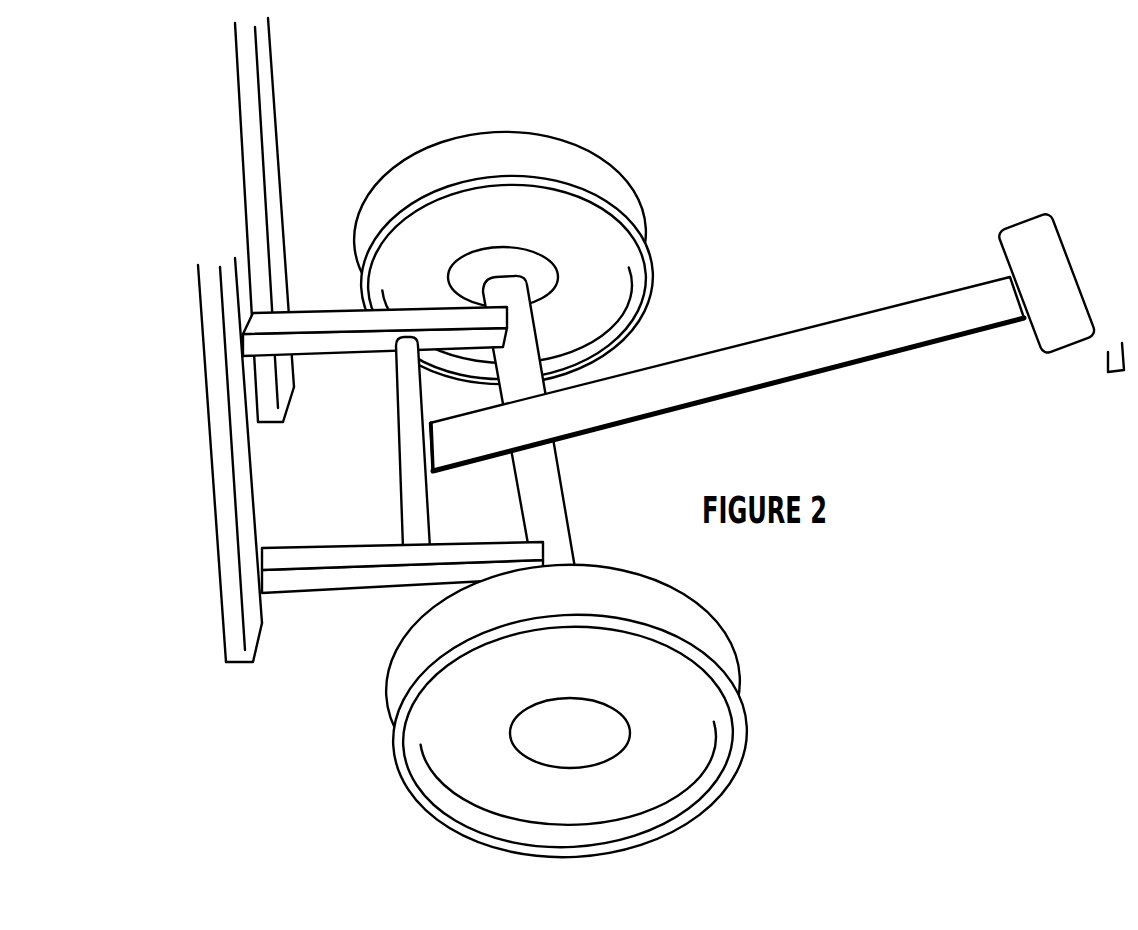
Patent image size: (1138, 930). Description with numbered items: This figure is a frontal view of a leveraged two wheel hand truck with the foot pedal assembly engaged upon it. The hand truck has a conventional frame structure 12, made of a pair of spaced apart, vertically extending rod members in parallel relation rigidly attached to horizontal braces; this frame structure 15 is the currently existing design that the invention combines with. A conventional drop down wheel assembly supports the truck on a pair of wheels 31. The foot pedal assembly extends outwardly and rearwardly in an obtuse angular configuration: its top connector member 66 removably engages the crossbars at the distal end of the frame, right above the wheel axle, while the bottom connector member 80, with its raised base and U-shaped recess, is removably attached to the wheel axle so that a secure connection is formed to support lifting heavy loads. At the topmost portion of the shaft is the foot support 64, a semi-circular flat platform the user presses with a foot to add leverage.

The frame structure 12 is at (270, 92).
The frame structure 15 is at (199, 298).
The wheels 31 is at (718, 630).
The foot support 64 is at (1077, 357).
The top connector member 66 is at (432, 470).
The bottom connector member 80 is at (553, 445).